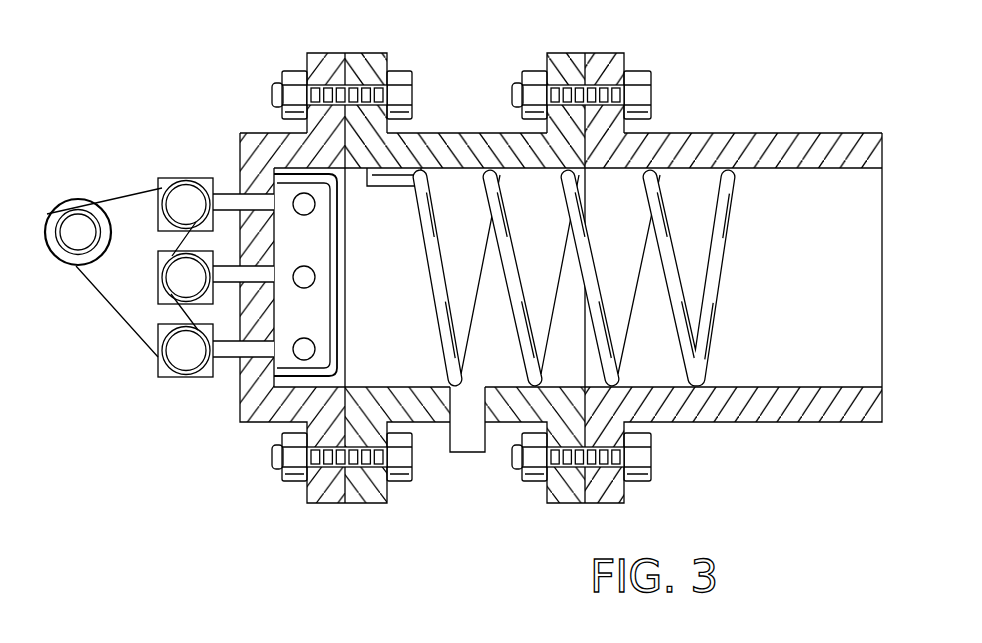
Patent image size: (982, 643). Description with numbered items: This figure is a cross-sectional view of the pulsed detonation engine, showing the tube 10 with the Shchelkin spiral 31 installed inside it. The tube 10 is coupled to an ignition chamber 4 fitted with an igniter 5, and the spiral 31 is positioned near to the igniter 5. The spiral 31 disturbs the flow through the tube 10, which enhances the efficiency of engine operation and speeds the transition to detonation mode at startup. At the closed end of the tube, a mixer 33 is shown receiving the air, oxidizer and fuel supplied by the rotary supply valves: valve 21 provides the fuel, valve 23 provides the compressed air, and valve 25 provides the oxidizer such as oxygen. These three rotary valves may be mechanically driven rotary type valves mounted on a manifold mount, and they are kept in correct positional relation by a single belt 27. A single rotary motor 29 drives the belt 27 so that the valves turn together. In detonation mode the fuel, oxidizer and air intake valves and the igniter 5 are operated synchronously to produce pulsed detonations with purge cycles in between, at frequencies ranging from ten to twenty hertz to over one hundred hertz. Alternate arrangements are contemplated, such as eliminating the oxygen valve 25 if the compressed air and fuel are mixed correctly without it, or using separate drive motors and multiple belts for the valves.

The ignition chamber 4 is at (455, 131).
The igniter 5 is at (437, 447).
The tube 10 is at (779, 138).
The valve 21 is at (183, 197).
The valve 23 is at (183, 283).
The valve 25 is at (187, 353).
The belt 27 is at (127, 195).
The rotary motor 29 is at (73, 268).
The Shchelkin spiral 31 is at (668, 226).
The mixer 33 is at (333, 246).